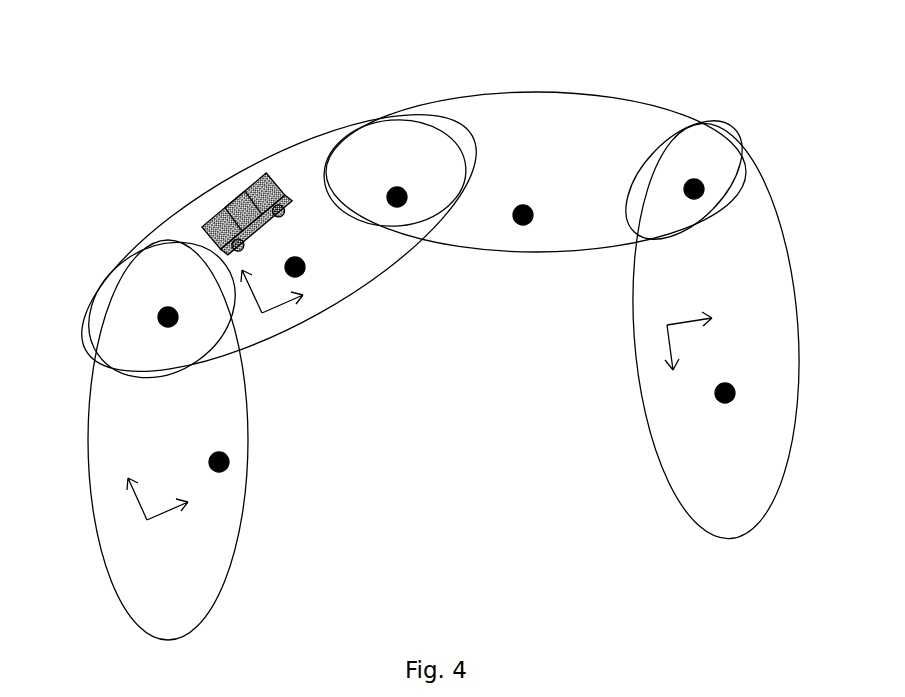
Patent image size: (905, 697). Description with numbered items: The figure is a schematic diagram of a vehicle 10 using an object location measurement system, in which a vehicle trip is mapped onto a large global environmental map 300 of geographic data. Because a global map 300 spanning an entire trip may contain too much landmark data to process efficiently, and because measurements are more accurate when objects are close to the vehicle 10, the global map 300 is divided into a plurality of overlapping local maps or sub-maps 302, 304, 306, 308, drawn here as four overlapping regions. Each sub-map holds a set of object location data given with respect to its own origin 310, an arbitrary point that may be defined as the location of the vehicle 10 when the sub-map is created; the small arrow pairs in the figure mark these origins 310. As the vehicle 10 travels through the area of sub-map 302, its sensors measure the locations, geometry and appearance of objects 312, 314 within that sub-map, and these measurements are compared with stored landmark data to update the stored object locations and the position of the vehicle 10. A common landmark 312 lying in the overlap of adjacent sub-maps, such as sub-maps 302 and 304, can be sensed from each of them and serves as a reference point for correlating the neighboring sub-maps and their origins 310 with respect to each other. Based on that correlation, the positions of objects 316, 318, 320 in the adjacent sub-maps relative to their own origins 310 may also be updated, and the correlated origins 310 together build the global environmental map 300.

The vehicle 10 is at (218, 205).
The global environmental map 300 is at (471, 482).
The sub-map 302 is at (229, 180).
The sub-map 304 is at (106, 562).
The sub-map 306 is at (516, 88).
The sub-map 308 is at (794, 302).
The origin 310 is at (280, 307).
The common landmark 312 is at (391, 186).
The object 314 is at (306, 266).
The object 316 is at (230, 463).
The object 318 is at (514, 224).
The object 320 is at (710, 407).